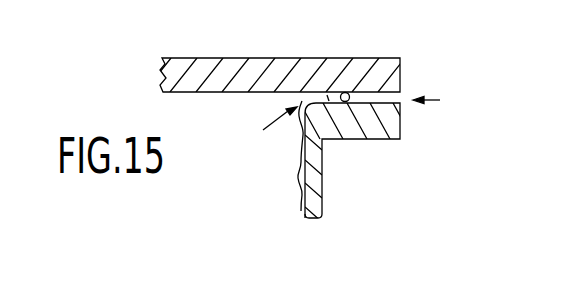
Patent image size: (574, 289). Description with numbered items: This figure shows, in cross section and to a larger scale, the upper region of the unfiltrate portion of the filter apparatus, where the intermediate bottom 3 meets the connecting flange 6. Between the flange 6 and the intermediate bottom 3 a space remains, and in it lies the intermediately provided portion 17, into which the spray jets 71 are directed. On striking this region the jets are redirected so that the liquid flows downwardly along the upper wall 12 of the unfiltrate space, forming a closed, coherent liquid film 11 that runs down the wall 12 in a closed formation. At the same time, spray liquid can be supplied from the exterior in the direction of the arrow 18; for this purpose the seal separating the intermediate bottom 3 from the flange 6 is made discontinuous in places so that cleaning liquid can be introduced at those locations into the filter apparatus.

The intermediate bottom 3 is at (257, 75).
The connecting flange 6 is at (381, 129).
The liquid film 11 is at (299, 170).
The upper wall 12 is at (303, 216).
The portion 17 is at (328, 96).
The arrow 18 is at (440, 100).
The spray jets 71 is at (348, 91).